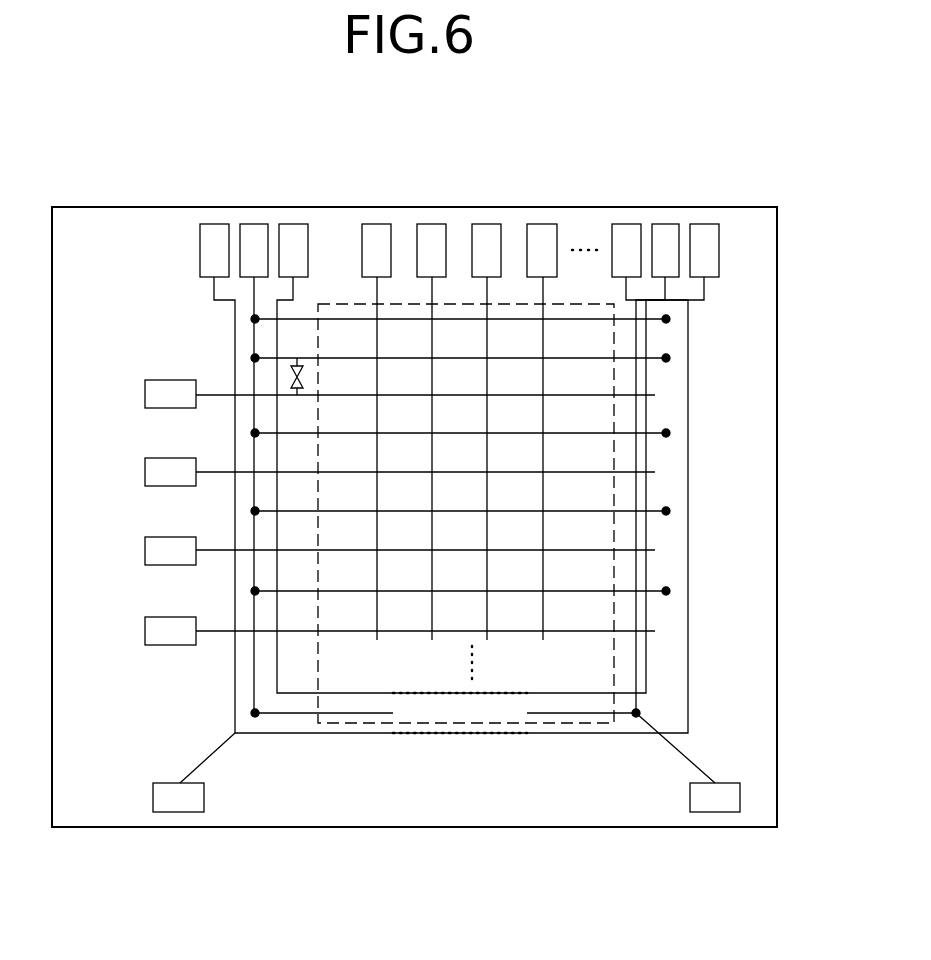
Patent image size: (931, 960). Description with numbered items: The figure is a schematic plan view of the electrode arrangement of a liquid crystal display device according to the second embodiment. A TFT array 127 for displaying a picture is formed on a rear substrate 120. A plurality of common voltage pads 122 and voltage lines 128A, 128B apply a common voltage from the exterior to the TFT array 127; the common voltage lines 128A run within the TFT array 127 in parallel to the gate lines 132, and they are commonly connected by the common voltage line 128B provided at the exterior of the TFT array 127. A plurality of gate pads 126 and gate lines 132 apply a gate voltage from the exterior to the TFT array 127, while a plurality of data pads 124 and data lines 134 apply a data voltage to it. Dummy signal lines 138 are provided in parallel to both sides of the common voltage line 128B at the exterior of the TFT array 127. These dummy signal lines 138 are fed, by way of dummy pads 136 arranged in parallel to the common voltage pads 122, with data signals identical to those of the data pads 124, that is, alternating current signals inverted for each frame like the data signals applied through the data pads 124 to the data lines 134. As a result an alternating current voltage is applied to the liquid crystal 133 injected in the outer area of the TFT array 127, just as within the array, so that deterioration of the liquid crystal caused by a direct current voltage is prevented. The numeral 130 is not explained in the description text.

The rear substrate 120 is at (777, 211).
The common voltage pads 122 is at (254, 224).
The data pads 124 is at (536, 220).
The gate pads 126 is at (140, 398).
The TFT array 127 is at (614, 381).
The common voltage lines 128A is at (355, 318).
The common voltage line 128B is at (255, 376).
The scan lines 130 is at (213, 396).
The gate lines 132 is at (462, 380).
The liquid crystal 133 is at (303, 366).
The data lines 134 is at (377, 352).
The dummy pads 136 is at (214, 224).
The dummy signal lines 138 is at (235, 330).